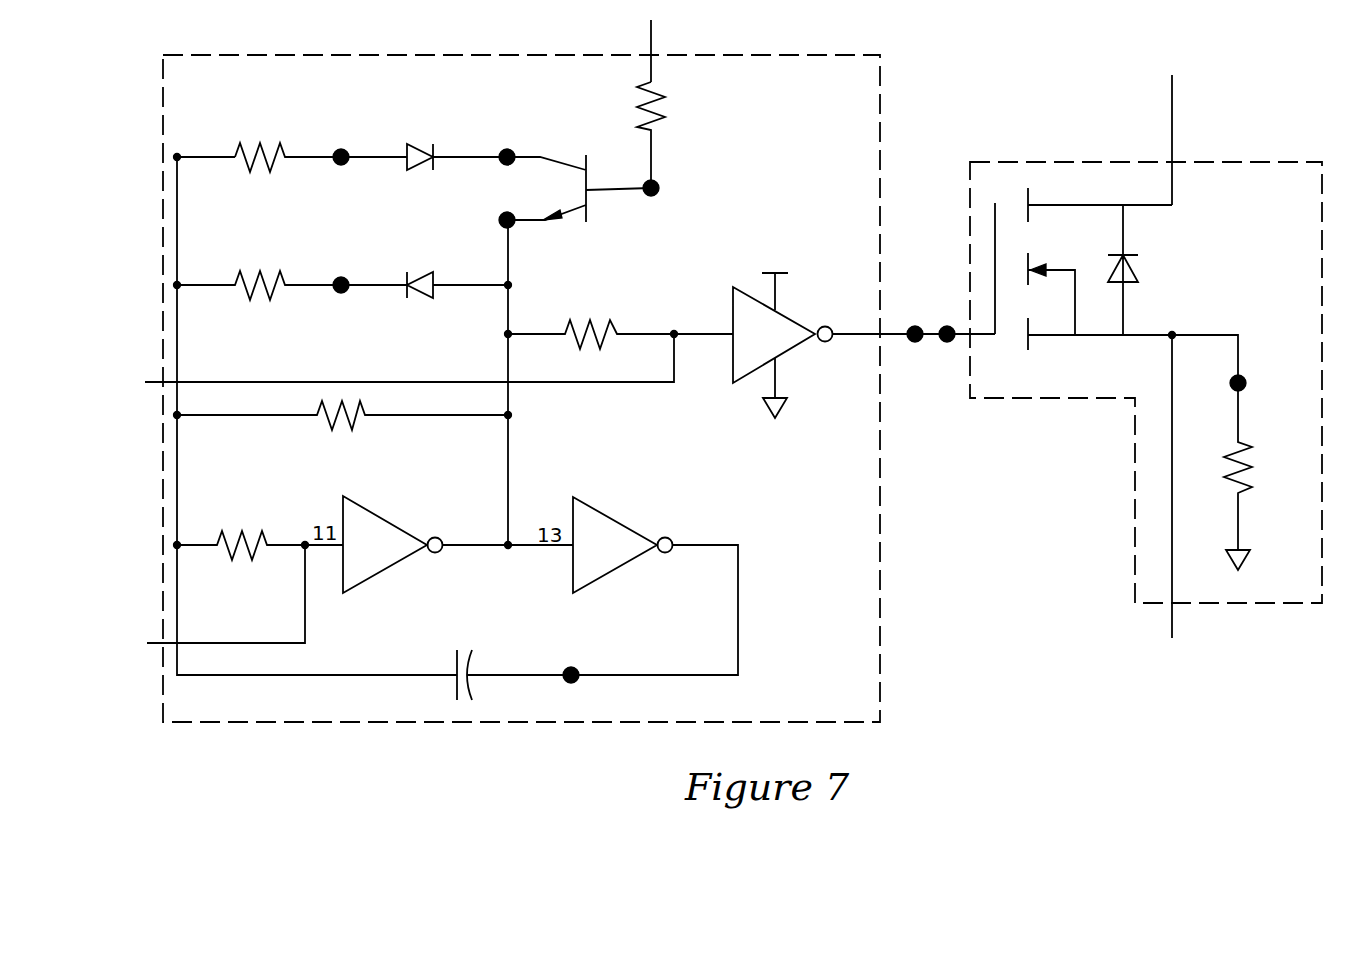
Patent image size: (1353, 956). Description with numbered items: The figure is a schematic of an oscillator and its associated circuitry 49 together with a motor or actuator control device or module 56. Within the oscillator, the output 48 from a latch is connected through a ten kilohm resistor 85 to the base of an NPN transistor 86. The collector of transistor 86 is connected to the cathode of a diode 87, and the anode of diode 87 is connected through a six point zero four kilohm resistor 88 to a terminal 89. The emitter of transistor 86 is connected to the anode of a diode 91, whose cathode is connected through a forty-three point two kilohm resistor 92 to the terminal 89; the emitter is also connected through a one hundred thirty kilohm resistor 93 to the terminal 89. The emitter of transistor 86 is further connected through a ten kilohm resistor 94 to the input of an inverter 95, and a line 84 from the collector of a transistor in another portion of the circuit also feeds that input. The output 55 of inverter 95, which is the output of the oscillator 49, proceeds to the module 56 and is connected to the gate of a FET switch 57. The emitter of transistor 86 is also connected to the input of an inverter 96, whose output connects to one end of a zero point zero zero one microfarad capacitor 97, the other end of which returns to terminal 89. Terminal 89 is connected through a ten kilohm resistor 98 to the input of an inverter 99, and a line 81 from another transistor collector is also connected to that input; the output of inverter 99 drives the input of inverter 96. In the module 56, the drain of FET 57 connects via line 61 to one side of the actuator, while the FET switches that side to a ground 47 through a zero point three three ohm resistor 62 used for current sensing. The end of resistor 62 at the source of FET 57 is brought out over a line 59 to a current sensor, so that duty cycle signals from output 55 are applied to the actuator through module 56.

The oscillator and associated circuitry 49 is at (503, 55).
The output from the latch 48 is at (651, 36).
The resistor 85 is at (658, 101).
The resistor 88 is at (262, 143).
The diode 87 is at (420, 147).
The terminal 89 is at (177, 157).
The NPN transistor 86 is at (588, 214).
The resistor 92 is at (258, 272).
The diode 91 is at (425, 270).
The resistor 94 is at (590, 318).
The inverter 95 is at (752, 375).
The line 84 is at (156, 382).
The resistor 93 is at (345, 430).
The resistor 98 is at (243, 533).
The line 81 is at (156, 643).
The inverter 99 is at (367, 580).
The inverter 96 is at (597, 580).
The capacitor 97 is at (462, 652).
The output 55 is at (887, 337).
The actuator control device or module 56 is at (1240, 162).
The FET switch 57 is at (1165, 260).
The line 61 is at (1172, 112).
The resistor 62 is at (1250, 465).
The ground 47 is at (1244, 561).
The line 59 is at (1172, 620).